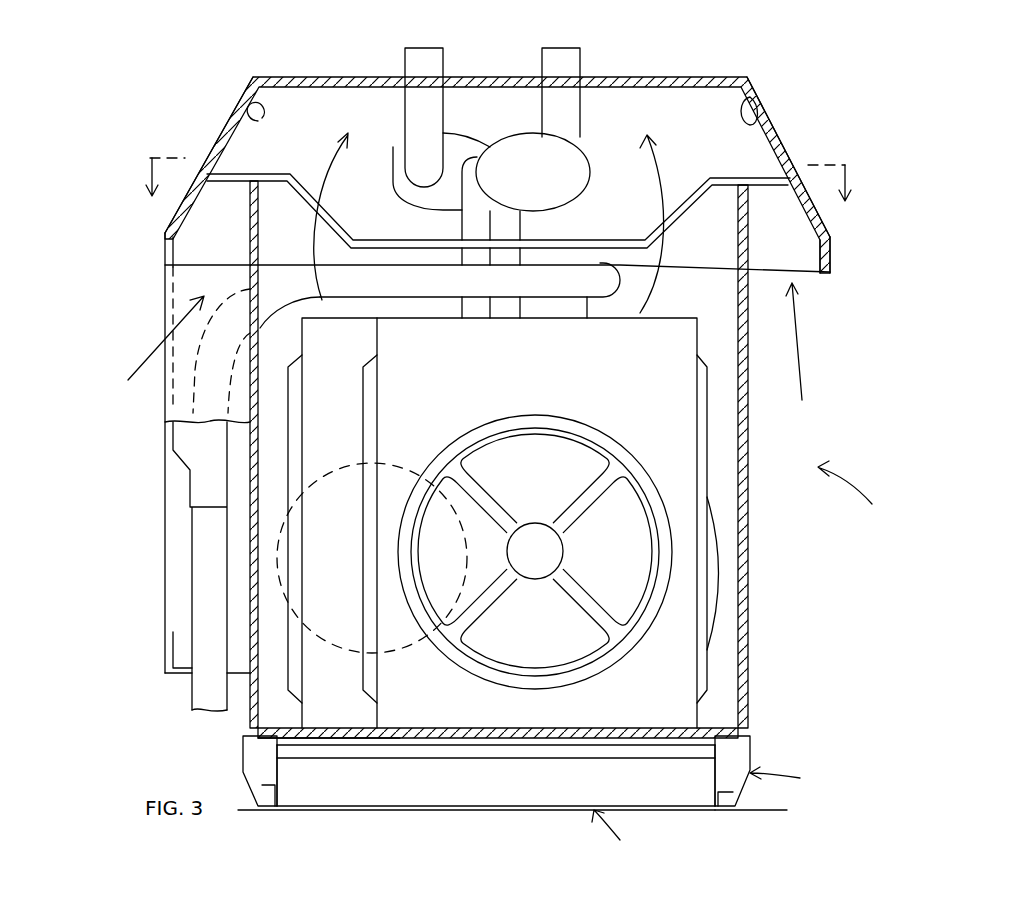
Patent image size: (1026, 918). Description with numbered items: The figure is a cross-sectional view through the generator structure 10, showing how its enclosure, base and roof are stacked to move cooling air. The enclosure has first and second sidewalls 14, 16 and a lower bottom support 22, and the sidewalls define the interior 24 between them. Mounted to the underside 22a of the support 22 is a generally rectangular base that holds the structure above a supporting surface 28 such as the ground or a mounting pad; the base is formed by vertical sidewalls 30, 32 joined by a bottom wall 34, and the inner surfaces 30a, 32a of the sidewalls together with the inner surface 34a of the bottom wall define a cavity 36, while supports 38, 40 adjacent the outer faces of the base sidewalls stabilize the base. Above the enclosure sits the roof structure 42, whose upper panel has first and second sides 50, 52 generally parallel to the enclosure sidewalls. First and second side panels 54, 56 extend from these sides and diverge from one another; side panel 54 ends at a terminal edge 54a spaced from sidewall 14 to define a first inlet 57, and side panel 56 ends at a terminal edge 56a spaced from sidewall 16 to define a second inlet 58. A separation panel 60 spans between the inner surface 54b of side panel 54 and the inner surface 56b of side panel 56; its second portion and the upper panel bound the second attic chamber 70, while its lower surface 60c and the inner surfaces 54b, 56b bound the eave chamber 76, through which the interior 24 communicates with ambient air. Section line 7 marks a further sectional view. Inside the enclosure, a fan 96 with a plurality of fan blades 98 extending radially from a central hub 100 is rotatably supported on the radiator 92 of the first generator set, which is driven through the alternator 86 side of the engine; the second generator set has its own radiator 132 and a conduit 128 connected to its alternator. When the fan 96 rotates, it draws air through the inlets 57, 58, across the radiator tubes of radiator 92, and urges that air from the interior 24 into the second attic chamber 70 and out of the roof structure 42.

The generator structure 10 is at (861, 494).
The first sidewall 14 is at (252, 520).
The second sidewall 16 is at (748, 488).
The lower bottom support 22 is at (649, 728).
The underside of support 22a is at (422, 735).
The interior of enclosure 24 is at (712, 314).
The supporting surface 28 is at (787, 810).
The vertical sidewall of base 30 is at (281, 787).
The inner surface of sidewall 30 30a is at (280, 768).
The vertical sidewall of base 32 is at (717, 805).
The inner surface of sidewall 32 32a is at (712, 774).
The bottom wall 34 is at (385, 798).
The inner surface of bottom wall 34a is at (447, 800).
The cavity 36 is at (538, 797).
The support 38 is at (246, 790).
The support 40 is at (775, 786).
The roof structure 42 is at (330, 77).
The first side of upper panel 50 is at (254, 78).
The second side of upper panel 52 is at (745, 78).
The first side panel 54 is at (219, 138).
The terminal edge of first side panel 54a is at (170, 256).
The inner surface of first side panel 54b is at (262, 118).
The second side panel 56 is at (779, 142).
The terminal edge of second side panel 56a is at (833, 273).
The inner surface of second side panel 56b is at (750, 95).
The first inlet 57 is at (172, 257).
The second inlet 58 is at (835, 275).
The separation panel 60 is at (278, 176).
The lower surface of separation panel 60c is at (352, 312).
The second attic chamber 70 is at (626, 204).
The eave chamber 76 is at (296, 249).
The section line 7 is at (499, 195).
The alternator 86 is at (745, 572).
The radiator 92 is at (648, 386).
The fan 96 is at (492, 412).
The fan blades 98 is at (588, 494).
The central hub 100 is at (553, 553).
The conduit 128 is at (335, 478).
The radiator 132 is at (312, 390).